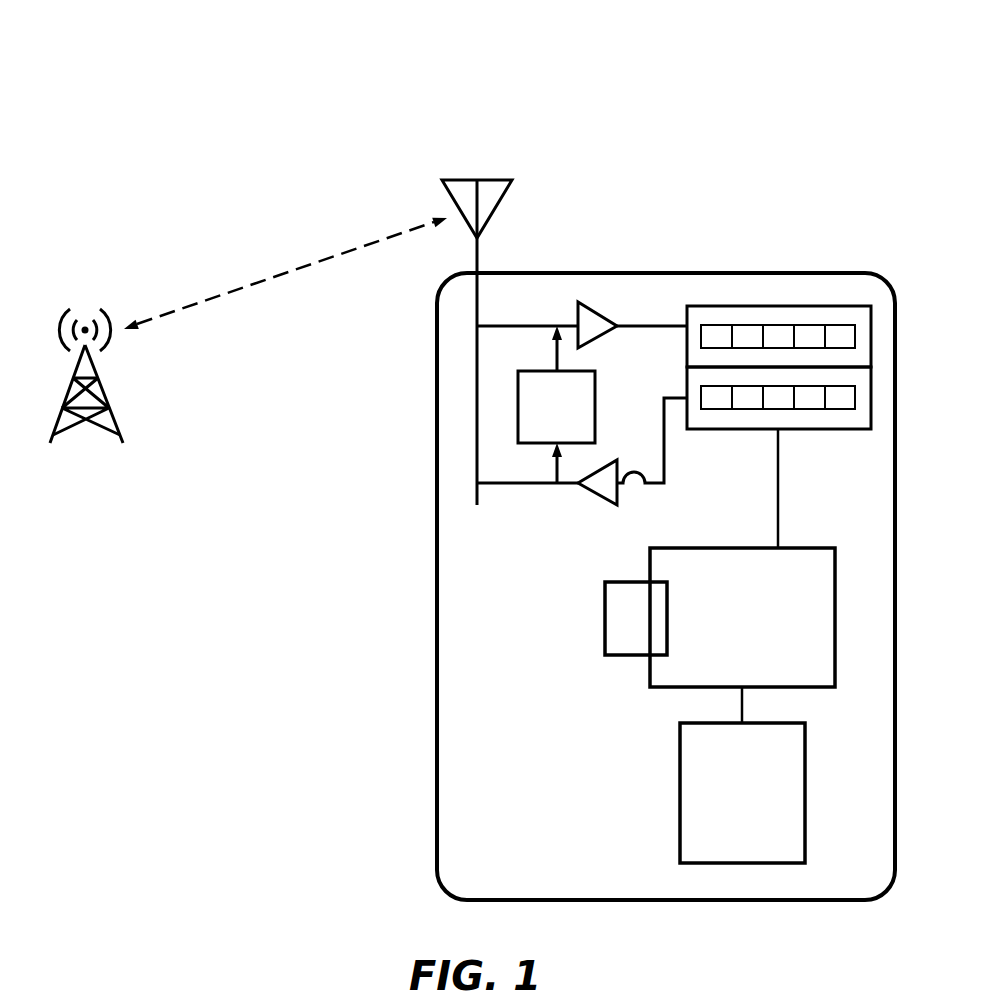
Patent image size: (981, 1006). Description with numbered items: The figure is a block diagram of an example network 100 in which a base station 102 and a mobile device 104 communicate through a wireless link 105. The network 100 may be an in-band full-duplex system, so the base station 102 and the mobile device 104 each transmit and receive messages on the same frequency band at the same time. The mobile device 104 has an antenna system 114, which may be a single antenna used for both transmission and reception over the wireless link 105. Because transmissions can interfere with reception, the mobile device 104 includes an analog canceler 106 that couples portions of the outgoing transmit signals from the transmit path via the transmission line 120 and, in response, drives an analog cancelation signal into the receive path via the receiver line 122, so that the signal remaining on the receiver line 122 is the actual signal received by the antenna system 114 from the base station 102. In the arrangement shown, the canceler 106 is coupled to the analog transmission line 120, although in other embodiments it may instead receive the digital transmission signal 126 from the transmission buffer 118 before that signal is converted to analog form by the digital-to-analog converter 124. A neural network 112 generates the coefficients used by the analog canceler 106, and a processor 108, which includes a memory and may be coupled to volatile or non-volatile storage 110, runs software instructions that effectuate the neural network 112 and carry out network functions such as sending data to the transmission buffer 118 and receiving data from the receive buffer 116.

The network 100 is at (291, 66).
The base station 102 is at (113, 415).
The mobile device 104 is at (476, 872).
The wireless link 105 is at (278, 275).
The analog canceler 106 is at (538, 420).
The processor 108 is at (731, 646).
The storage 110 is at (723, 822).
The neural network 112 is at (617, 644).
The antenna system 114 is at (493, 178).
The receive buffer 116 is at (833, 306).
The transmission buffer 118 is at (827, 429).
The transmission line 120 is at (515, 483).
The receiver line 122 is at (535, 326).
The digital-to-analog converter 124 is at (585, 487).
The digital transmission signal 126 is at (664, 447).